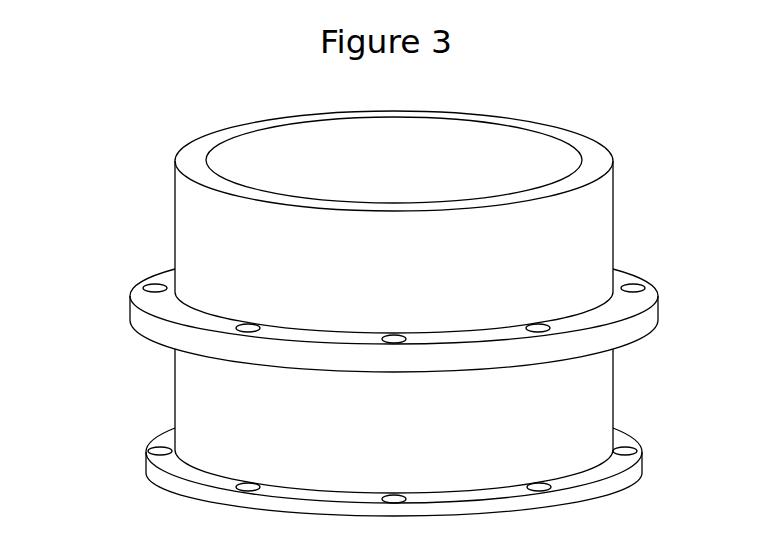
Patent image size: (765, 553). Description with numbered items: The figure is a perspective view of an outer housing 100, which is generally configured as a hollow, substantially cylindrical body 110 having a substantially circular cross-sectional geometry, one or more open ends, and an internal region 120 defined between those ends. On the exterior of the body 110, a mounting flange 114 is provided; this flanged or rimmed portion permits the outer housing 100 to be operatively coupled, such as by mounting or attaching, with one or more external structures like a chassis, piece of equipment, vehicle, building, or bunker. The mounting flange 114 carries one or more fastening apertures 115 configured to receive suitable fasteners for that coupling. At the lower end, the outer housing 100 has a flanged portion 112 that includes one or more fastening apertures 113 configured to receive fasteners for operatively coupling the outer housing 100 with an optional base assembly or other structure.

The outer housing 100 is at (123, 132).
The cylindrical body 110 is at (409, 282).
The internal region 120 is at (458, 168).
The mounting flange 114 is at (129, 313).
The fastening apertures 115 is at (155, 288).
The flanged portion 112 is at (145, 462).
The fastening apertures 113 is at (160, 450).